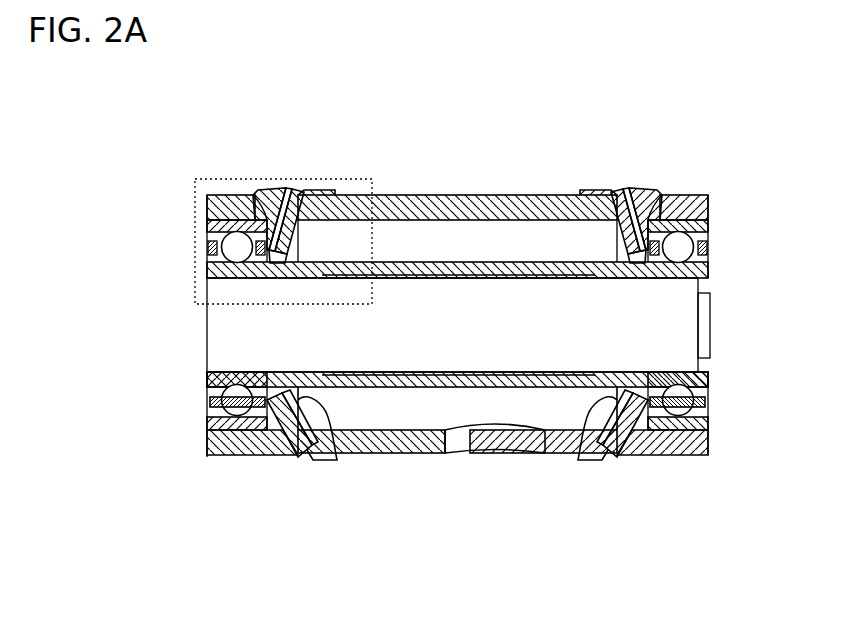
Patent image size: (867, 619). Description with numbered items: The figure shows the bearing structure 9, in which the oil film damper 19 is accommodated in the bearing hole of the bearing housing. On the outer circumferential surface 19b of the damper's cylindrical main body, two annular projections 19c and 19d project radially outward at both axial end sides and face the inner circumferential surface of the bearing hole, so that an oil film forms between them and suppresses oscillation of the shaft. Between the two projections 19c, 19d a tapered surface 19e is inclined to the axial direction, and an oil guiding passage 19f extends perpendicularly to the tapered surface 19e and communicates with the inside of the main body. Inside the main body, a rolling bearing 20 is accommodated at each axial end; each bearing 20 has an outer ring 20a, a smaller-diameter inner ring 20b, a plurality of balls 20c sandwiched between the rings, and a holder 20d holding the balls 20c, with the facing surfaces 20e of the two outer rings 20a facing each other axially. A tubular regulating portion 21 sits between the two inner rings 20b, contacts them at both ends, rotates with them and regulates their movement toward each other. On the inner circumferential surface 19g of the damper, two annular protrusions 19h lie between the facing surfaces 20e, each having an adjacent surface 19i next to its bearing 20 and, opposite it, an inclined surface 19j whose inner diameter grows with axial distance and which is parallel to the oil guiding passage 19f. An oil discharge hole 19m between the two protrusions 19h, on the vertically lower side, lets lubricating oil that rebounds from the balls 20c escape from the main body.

The bearing structure 9 is at (189, 128).
The oil film damper 19 is at (475, 158).
The outer circumferential surface 19b is at (466, 195).
The projection 19c is at (322, 190).
The projection 19d is at (262, 190).
The tapered surface 19e is at (287, 189).
The oil guiding passage 19f is at (300, 190).
The inner circumferential surface 19g is at (383, 455).
The protrusion 19h is at (337, 460).
The adjacent surface 19i is at (246, 458).
The inclined surface 19j is at (308, 460).
The oil discharge hole 19m is at (462, 453).
The rolling bearing 20 is at (207, 279).
The outer ring 20a is at (207, 221).
The inner ring 20b is at (212, 402).
The ball 20c is at (232, 243).
The holder 20d is at (208, 248).
The facing surface 20e is at (253, 194).
The regulating portion 21 is at (488, 388).